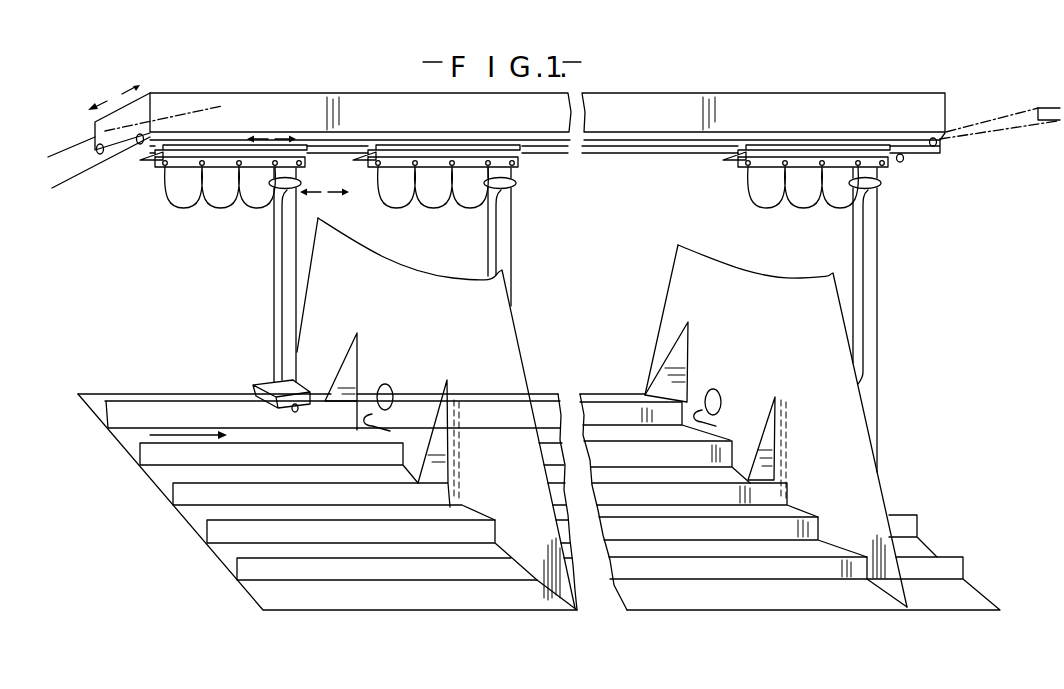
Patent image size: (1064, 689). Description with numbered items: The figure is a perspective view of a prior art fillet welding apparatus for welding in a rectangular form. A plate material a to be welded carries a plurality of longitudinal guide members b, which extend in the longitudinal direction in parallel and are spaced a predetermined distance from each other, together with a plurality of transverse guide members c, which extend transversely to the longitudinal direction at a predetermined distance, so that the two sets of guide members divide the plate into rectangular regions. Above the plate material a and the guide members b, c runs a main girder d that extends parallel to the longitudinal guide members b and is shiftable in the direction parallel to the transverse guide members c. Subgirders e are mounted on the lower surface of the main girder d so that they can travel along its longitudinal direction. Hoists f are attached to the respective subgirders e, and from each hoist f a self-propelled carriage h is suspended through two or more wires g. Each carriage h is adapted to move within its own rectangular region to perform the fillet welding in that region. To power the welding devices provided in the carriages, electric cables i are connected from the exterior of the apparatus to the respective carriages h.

The plate material a is at (263, 590).
The longitudinal guide members b is at (218, 533).
The transverse guide members c is at (523, 538).
The main girder d is at (891, 108).
The subgirders e is at (227, 146).
The hoists f is at (275, 188).
The wires g is at (287, 303).
The self-propelled carriages h is at (263, 390).
The electric cables i is at (280, 253).